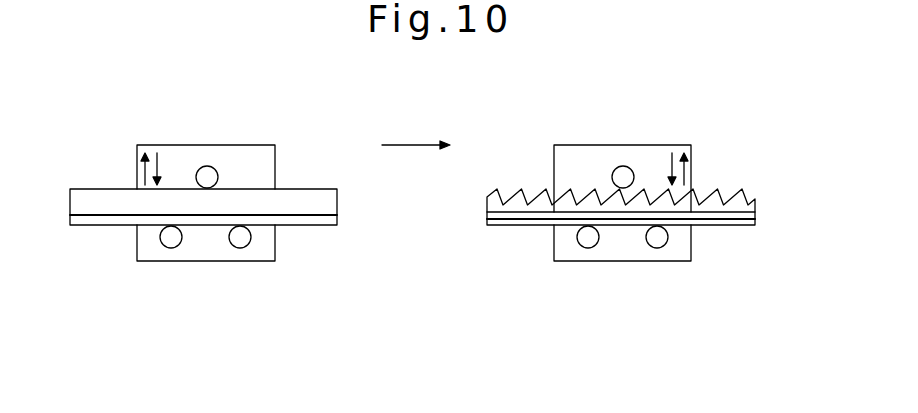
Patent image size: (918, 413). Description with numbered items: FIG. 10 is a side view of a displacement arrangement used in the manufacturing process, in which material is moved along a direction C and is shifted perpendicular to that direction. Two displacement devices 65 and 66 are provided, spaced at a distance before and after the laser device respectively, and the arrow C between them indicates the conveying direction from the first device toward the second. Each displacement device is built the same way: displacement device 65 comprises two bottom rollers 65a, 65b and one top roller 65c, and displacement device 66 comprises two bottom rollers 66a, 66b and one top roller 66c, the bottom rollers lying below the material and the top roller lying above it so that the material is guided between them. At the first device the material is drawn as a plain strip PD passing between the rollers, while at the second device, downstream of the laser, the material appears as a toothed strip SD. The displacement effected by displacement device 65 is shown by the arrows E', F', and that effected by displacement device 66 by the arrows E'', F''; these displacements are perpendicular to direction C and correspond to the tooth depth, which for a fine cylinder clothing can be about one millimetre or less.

The displacement device 65 is at (275, 145).
The bottom roller 65a is at (170, 238).
The bottom roller 65b is at (241, 238).
The top roller 65c is at (208, 166).
The displacement device 66 is at (554, 145).
The bottom roller 66a is at (588, 238).
The bottom roller 66b is at (658, 238).
The top roller 66c is at (622, 166).
The plain plate PD is at (93, 226).
The serrated plate SD is at (725, 227).
The direction C is at (415, 145).
The displacement direction E' is at (114, 138).
The displacement direction F' is at (186, 126).
The displacement direction E" E'' is at (721, 138).
The displacement direction F" F'' is at (650, 126).